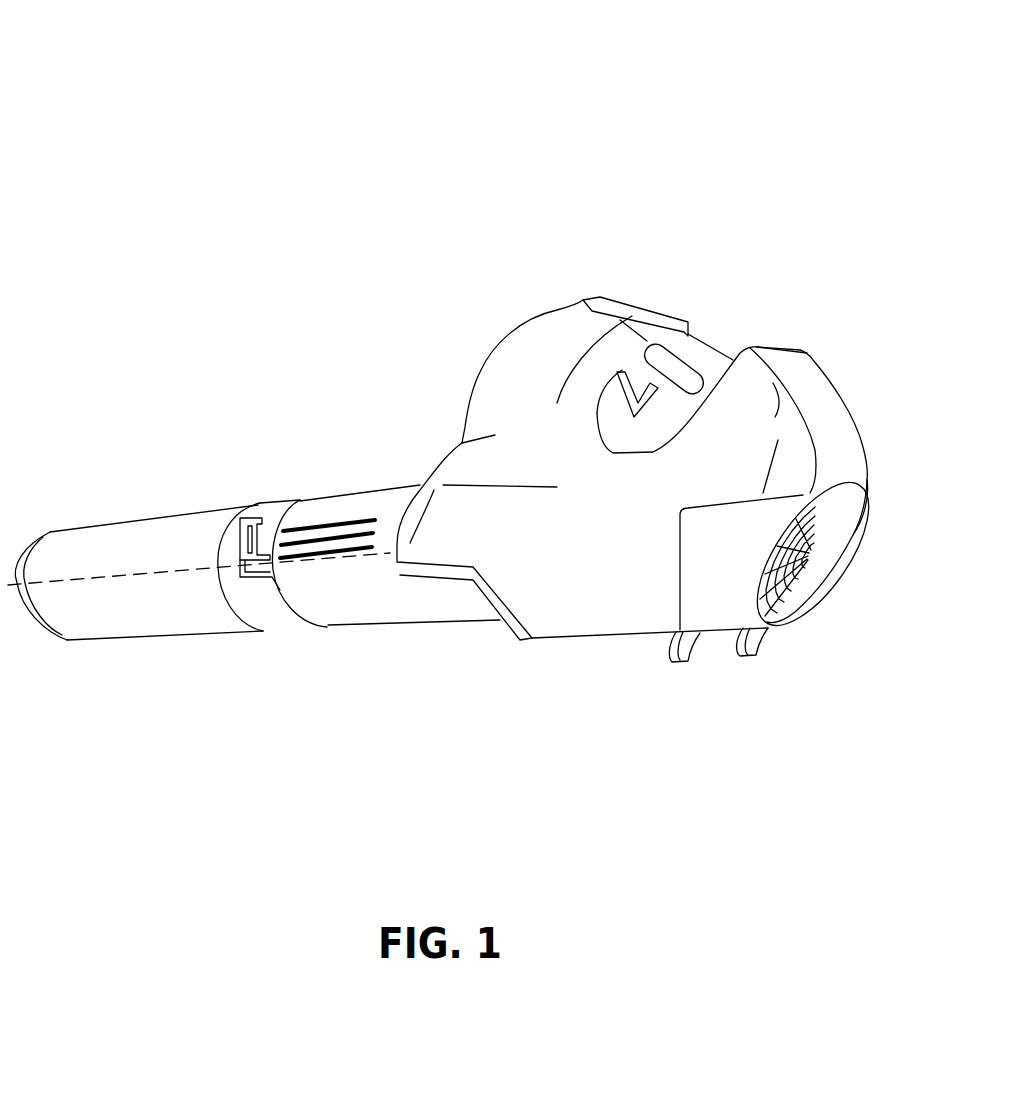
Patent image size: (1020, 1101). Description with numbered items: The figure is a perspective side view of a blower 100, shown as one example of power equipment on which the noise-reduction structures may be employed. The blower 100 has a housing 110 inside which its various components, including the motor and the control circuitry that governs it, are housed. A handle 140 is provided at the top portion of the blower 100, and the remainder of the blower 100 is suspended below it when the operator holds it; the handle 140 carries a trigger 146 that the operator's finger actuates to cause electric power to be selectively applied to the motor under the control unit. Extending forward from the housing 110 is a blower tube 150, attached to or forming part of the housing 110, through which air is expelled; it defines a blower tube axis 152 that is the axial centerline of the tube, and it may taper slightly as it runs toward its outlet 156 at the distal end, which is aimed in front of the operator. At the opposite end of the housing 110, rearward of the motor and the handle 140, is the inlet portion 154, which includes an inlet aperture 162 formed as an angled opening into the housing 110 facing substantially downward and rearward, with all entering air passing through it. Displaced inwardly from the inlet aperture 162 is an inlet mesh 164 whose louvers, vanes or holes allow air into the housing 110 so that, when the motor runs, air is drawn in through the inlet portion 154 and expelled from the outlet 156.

The blower 100 is at (153, 105).
The housing 110 is at (493, 410).
The handle 140 is at (667, 353).
The trigger 146 is at (637, 380).
The blower tube 150 is at (147, 523).
The blower tube axis 152 is at (193, 570).
The inlet portion 154 is at (812, 610).
The outlet 156 is at (17, 560).
The inlet aperture 162 is at (853, 537).
The inlet mesh 164 is at (807, 500).